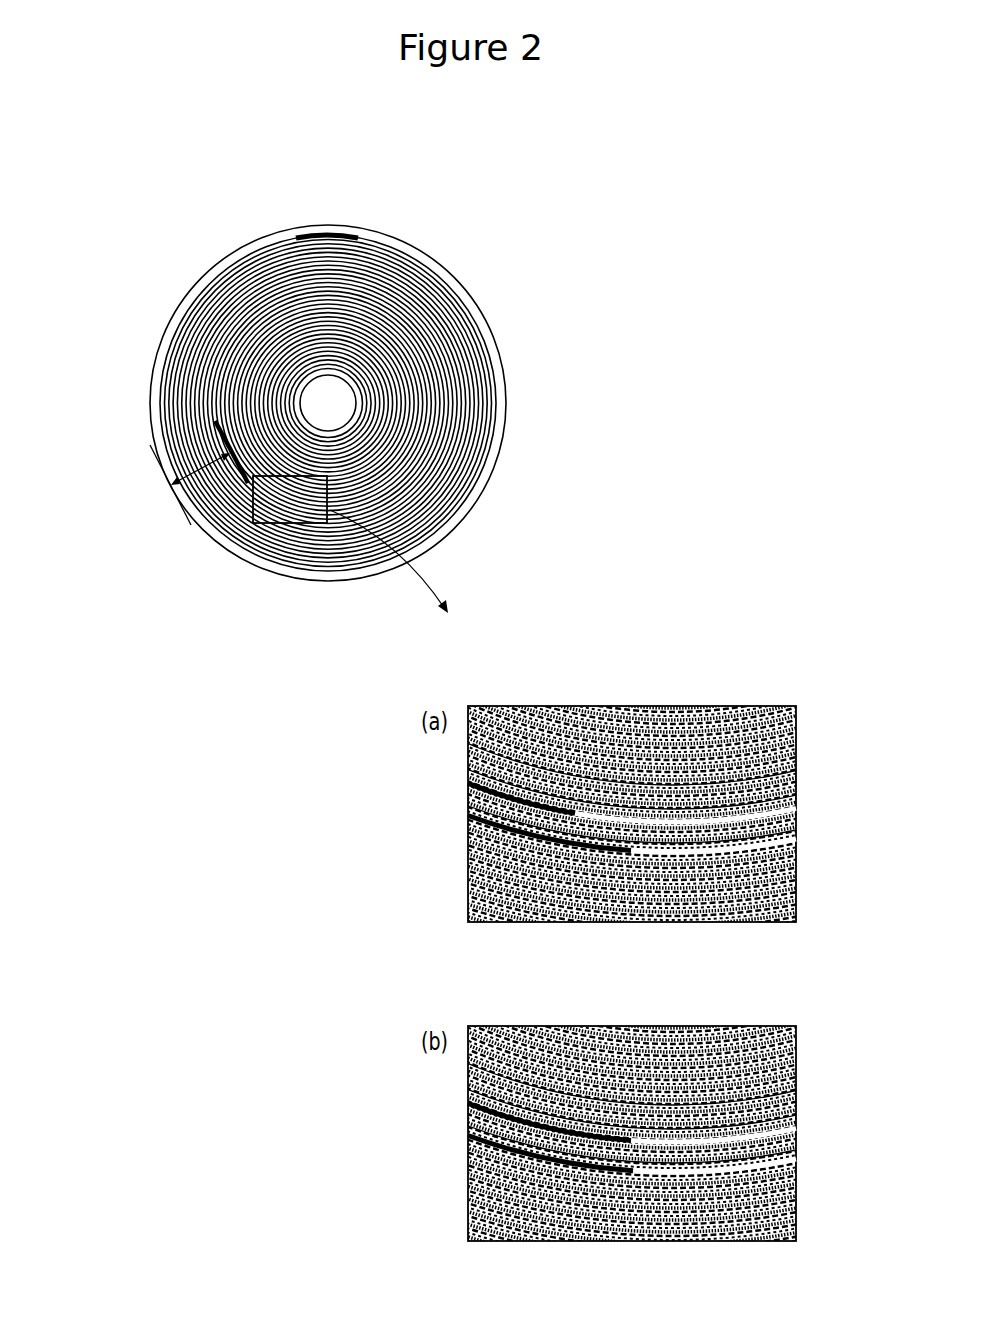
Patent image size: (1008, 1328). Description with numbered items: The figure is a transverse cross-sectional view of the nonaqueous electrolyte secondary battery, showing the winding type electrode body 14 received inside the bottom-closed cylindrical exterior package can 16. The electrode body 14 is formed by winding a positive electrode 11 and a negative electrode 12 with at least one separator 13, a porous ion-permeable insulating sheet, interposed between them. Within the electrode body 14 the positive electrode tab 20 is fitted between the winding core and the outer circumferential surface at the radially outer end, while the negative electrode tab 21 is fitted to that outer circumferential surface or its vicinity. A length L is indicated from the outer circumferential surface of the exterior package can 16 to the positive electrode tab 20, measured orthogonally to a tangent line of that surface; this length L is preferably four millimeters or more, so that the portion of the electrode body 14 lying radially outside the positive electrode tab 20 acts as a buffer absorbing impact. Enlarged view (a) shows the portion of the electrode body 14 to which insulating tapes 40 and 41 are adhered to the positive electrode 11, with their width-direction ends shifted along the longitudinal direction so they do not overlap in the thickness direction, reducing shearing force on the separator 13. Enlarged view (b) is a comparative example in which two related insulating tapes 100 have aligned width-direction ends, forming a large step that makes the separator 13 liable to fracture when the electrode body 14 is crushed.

The positive electrode 11 is at (790, 787).
The negative electrode 12 is at (790, 822).
The separator 13 is at (790, 762).
The electrode body 14 is at (472, 367).
The exterior package can 16 is at (445, 263).
The positive electrode tab 20 is at (212, 430).
The negative electrode tab 21 is at (340, 227).
The insulating tape 40 is at (460, 774).
The insulating tape 41 is at (460, 806).
The insulating tape 100 is at (460, 1096).
The length L is at (202, 503).